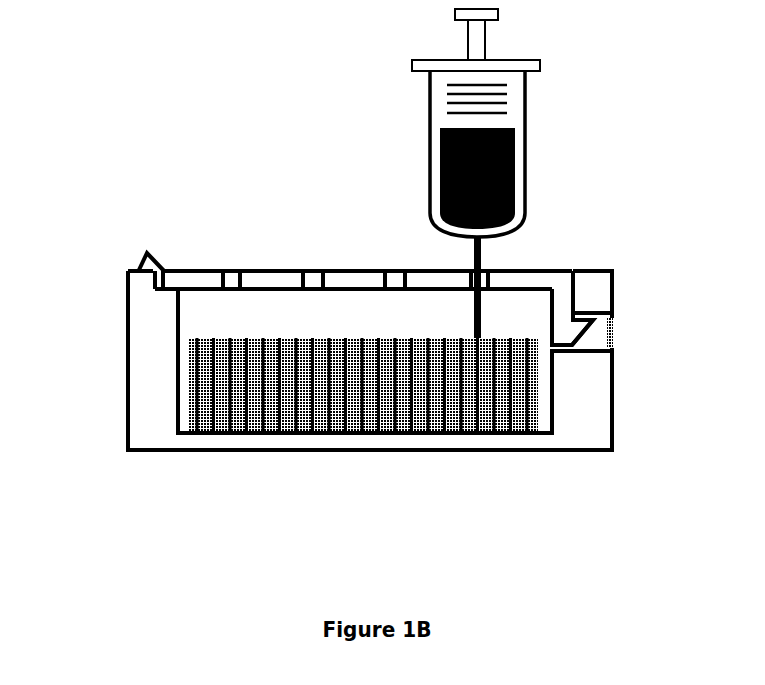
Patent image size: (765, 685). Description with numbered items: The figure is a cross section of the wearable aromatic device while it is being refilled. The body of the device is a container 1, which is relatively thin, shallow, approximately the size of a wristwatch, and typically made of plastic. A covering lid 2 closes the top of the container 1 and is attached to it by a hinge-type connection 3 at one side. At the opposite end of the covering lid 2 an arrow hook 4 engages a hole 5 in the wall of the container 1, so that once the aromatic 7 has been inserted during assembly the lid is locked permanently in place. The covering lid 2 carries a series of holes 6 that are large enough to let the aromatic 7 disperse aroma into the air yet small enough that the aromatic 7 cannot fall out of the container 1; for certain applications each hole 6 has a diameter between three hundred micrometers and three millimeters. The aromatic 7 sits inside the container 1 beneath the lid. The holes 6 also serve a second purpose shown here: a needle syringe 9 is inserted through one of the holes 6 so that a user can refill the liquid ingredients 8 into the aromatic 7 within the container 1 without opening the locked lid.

The container 1 is at (612, 438).
The covering lid 2 is at (207, 277).
The hinge-type connection 3 is at (136, 257).
The arrow hook 4 is at (563, 332).
The hole 5 is at (612, 335).
The holes 6 is at (312, 267).
The aromatic 7 is at (190, 393).
The liquid ingredients 8 is at (512, 168).
The needle syringe 9 is at (525, 107).